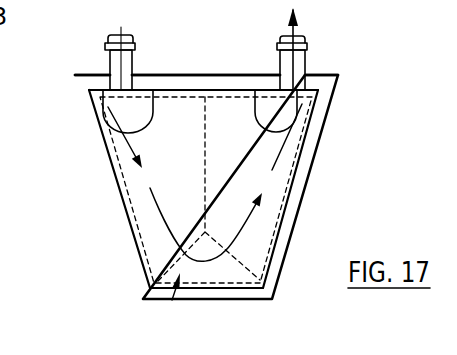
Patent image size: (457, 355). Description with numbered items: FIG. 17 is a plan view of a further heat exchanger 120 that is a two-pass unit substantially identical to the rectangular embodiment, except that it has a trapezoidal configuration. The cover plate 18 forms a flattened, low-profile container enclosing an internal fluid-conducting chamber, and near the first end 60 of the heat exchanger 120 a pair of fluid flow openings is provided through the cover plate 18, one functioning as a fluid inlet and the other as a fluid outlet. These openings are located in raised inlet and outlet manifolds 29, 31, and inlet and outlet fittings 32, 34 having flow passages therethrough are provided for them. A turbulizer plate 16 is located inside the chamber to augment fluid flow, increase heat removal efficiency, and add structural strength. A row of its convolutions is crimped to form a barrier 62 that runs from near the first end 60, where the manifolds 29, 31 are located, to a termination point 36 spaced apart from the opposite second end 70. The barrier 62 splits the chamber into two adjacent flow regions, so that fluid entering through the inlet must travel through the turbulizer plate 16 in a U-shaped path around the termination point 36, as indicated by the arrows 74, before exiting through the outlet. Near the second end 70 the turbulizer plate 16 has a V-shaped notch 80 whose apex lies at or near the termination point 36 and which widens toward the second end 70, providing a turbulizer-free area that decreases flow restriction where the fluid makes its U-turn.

The heat exchanger 120 is at (362, 85).
The first end 60 is at (197, 91).
The turbulizer plate 16 is at (283, 223).
The inlet fitting 32 is at (108, 62).
The outlet fitting 34 is at (305, 62).
The inlet manifold 29 is at (115, 108).
The outlet manifold 31 is at (300, 110).
The arrows 74 is at (133, 140).
The barrier 62 is at (205, 184).
The termination point 36 is at (205, 232).
The cover plate 18 is at (253, 247).
The second end 70 is at (235, 288).
The V-shaped notch 80 is at (172, 300).